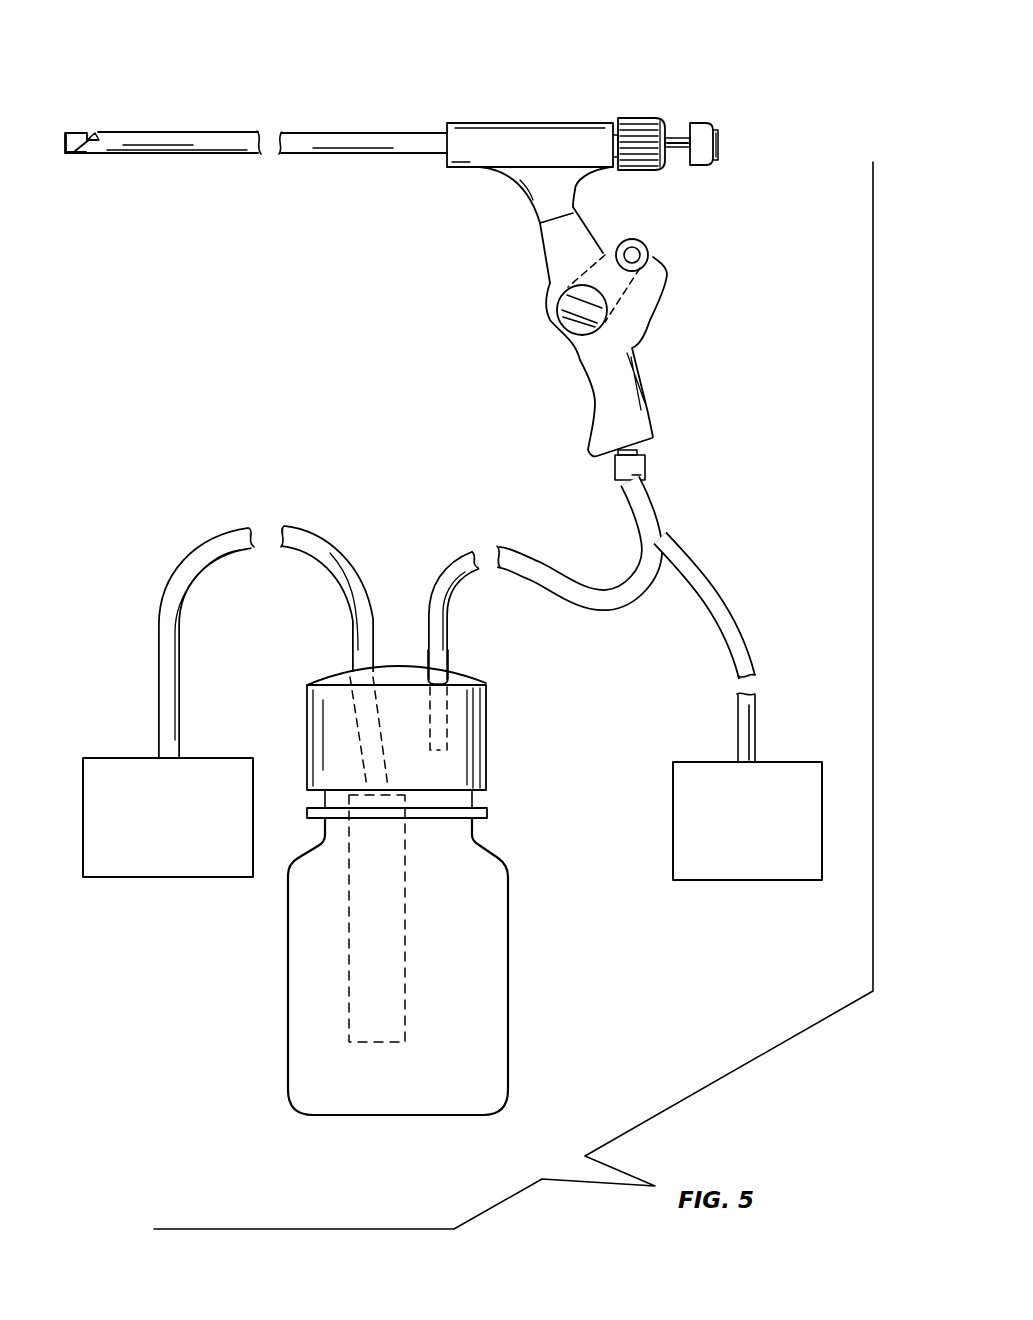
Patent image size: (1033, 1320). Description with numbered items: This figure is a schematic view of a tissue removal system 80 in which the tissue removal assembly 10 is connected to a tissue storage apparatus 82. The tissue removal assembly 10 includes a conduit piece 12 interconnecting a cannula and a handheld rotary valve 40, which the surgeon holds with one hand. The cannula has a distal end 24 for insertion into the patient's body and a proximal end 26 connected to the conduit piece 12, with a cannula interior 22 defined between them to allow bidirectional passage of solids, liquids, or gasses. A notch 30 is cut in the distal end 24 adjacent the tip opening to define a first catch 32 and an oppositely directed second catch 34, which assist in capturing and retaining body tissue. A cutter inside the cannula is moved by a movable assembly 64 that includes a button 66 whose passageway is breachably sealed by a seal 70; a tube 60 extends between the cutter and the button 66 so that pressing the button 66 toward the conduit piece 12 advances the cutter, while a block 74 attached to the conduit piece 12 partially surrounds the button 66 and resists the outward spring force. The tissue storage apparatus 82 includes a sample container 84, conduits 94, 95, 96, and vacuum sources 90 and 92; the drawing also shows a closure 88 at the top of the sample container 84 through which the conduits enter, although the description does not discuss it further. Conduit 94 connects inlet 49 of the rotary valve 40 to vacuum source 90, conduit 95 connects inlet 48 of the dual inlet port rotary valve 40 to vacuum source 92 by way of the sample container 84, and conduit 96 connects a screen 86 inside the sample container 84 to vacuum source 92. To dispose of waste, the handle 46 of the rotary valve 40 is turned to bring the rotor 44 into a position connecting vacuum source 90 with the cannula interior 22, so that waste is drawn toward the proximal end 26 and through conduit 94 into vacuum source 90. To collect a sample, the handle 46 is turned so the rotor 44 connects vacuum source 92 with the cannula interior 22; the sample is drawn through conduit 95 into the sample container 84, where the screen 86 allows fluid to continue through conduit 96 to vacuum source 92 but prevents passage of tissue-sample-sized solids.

The tissue removal assembly 10 is at (515, 161).
The conduit piece 12 is at (560, 123).
The cannula interior 22 is at (278, 152).
The distal end 24 is at (62, 120).
The proximal end 26 is at (443, 172).
The notch 30 is at (108, 117).
The first catch 32 is at (80, 137).
The second catch 34 is at (88, 140).
The handheld rotary valve 40 is at (619, 347).
The rotor 44 is at (573, 330).
The handle 46 is at (650, 250).
The inlet 48 is at (650, 457).
The inlet 49 is at (691, 445).
The tube 60 is at (280, 137).
The movable assembly 64 is at (718, 122).
The button 66 is at (705, 178).
The seal 70 is at (717, 147).
The block 74 is at (650, 117).
The tissue removal system 80 is at (762, 127).
The tissue storage apparatus 82 is at (605, 596).
The sample container 84 is at (518, 935).
The screen 86 is at (348, 950).
The bottle cap 88 is at (510, 717).
The vacuum source 90 is at (738, 862).
The vacuum source 92 is at (198, 863).
The conduit 94 is at (747, 660).
The conduit 95 is at (595, 588).
The conduit 96 is at (197, 555).